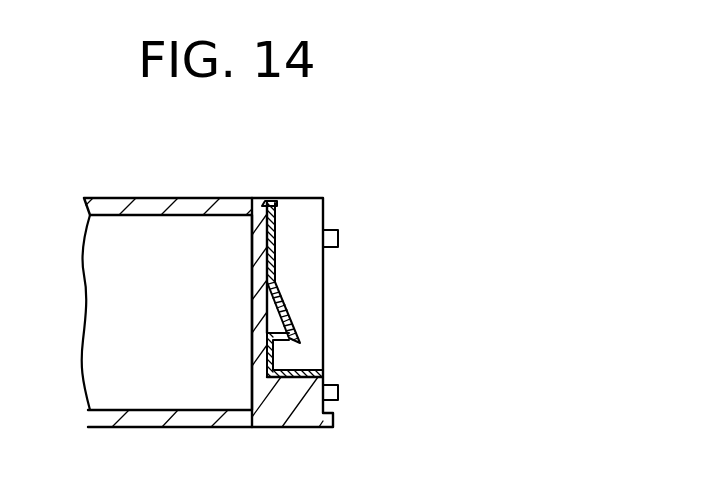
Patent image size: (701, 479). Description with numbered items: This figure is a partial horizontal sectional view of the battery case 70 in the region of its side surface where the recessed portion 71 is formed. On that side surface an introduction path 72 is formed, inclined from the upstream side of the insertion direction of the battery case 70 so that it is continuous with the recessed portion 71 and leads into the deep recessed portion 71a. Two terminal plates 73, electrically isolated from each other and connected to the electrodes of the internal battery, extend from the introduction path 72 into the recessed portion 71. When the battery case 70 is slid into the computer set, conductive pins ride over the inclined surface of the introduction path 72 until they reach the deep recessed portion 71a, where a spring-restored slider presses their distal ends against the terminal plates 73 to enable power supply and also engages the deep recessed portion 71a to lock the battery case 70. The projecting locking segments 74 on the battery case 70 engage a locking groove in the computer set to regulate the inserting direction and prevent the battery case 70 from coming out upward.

The battery case 70 is at (173, 210).
The recessed portion 71 is at (300, 217).
The deep recessed portion 71a is at (283, 357).
The introduction path 72 is at (283, 283).
The terminal plates 73 is at (285, 305).
The projecting locking segments 74 is at (336, 235).